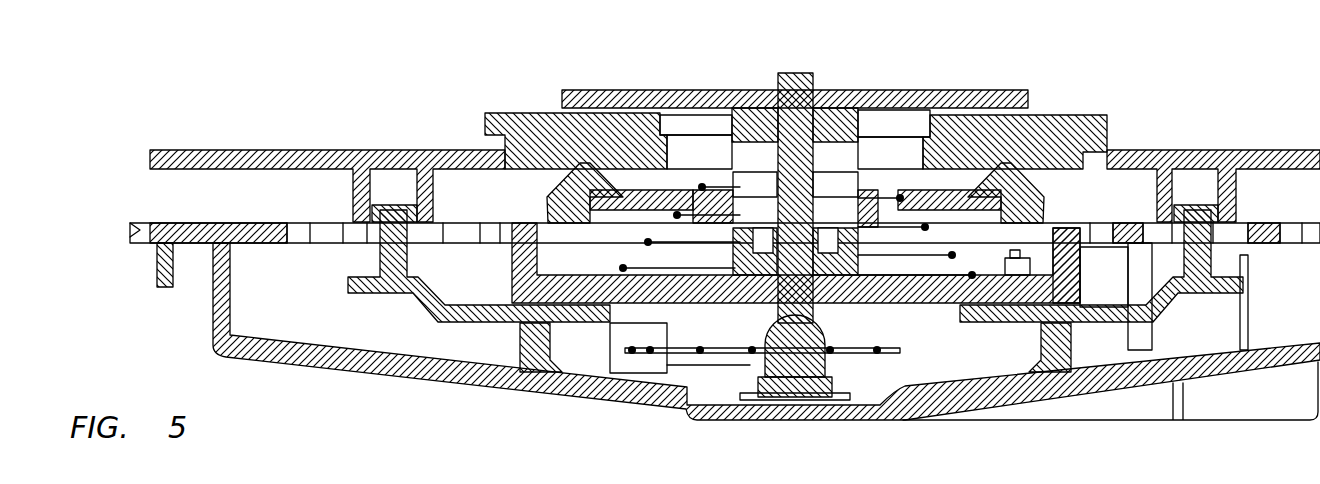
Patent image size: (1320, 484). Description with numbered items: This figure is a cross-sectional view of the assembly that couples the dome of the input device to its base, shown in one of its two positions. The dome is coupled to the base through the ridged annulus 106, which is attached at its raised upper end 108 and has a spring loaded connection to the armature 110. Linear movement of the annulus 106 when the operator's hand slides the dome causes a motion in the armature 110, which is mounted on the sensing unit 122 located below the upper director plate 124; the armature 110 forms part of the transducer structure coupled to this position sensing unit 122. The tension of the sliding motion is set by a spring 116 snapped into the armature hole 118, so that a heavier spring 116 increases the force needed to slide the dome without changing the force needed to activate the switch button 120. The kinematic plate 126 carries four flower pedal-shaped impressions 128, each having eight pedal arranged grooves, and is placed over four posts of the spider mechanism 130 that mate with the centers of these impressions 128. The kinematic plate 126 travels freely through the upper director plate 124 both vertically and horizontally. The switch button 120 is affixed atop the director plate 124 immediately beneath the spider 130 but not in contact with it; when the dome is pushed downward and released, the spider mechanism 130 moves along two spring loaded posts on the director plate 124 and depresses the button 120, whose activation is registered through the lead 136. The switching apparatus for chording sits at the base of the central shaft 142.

The ridged annulus 106 is at (1128, 150).
The raised upper end 108 is at (1107, 115).
The armature 110 is at (1015, 318).
The spring 116 is at (887, 358).
The armature hole 118 is at (938, 335).
The switch button 120 is at (1020, 256).
The sensing unit 122 is at (797, 358).
The upper director plate 124 is at (660, 300).
The kinematic plate 126 is at (490, 113).
The flower pedal-shaped impression 128 is at (563, 168).
The spider mechanism 130 is at (585, 188).
The lead 136 is at (1030, 268).
The shaft 142 is at (813, 73).